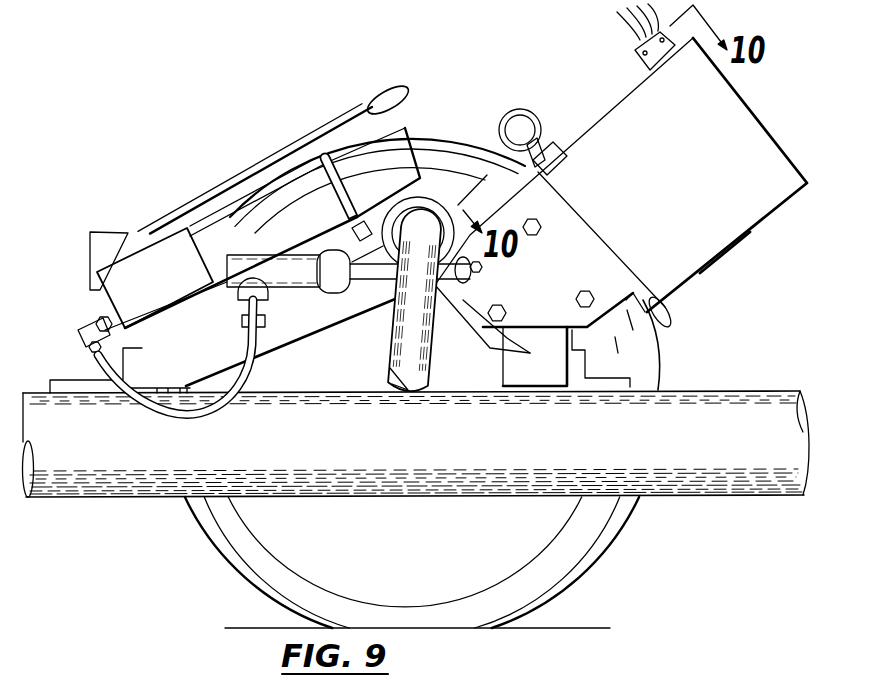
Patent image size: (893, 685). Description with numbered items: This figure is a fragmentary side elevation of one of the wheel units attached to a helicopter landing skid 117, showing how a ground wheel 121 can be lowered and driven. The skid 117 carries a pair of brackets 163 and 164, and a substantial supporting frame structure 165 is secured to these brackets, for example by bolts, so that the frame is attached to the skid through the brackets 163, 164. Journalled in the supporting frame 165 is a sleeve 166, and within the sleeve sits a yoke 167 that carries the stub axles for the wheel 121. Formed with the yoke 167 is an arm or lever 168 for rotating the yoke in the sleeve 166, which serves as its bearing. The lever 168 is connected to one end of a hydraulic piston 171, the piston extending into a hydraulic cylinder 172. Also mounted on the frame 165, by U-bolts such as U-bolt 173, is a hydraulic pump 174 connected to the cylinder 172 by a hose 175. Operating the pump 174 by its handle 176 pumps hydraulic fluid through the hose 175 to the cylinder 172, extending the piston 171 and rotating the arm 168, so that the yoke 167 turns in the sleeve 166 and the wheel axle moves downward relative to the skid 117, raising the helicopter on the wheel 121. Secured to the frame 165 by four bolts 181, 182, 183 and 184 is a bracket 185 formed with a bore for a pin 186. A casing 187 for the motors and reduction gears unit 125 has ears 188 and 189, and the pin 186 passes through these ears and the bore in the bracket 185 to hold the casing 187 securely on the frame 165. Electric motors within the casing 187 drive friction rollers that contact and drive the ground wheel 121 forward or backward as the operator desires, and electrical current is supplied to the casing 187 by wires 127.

The landing skid 117 is at (742, 458).
The wheel 121 is at (607, 545).
The motors and reduction gears unit 125 is at (727, 105).
The wires 127 is at (630, 25).
The bracket 163 is at (77, 379).
The bracket 164 is at (623, 383).
The supporting frame structure 165 is at (170, 326).
The sleeve 166 is at (418, 200).
The yoke 167 is at (405, 367).
The lever 168 is at (472, 278).
The hydraulic piston 171 is at (367, 277).
The hydraulic cylinder 172 is at (305, 287).
The U-bolt 173 is at (324, 156).
The hydraulic pump 174 is at (210, 230).
The hose 175 is at (207, 413).
The handle 176 is at (258, 172).
The bolt 181 is at (482, 267).
The bolt 182 is at (545, 227).
The bolt 183 is at (508, 312).
The bolt 184 is at (593, 301).
The bracket 185 is at (603, 245).
The pin 186 is at (570, 140).
The casing 187 is at (712, 263).
The ear 188 is at (548, 170).
The ear 189 is at (663, 290).